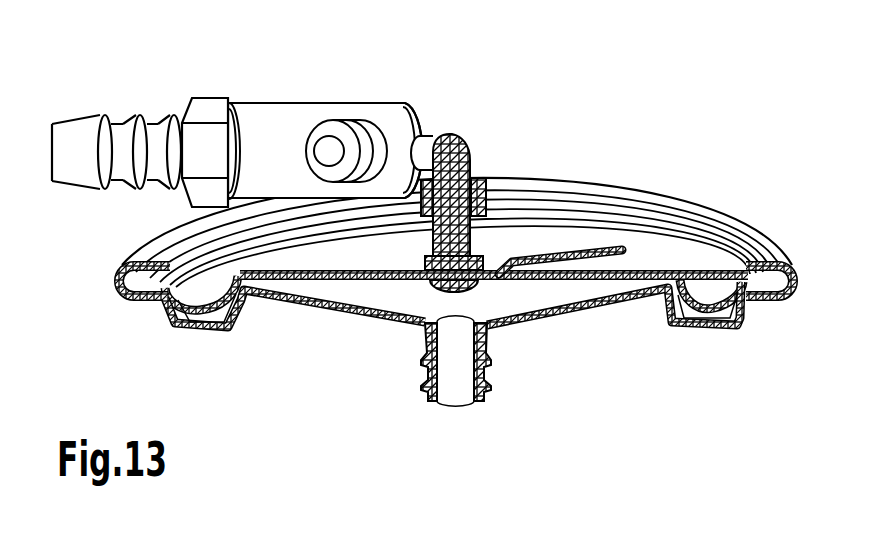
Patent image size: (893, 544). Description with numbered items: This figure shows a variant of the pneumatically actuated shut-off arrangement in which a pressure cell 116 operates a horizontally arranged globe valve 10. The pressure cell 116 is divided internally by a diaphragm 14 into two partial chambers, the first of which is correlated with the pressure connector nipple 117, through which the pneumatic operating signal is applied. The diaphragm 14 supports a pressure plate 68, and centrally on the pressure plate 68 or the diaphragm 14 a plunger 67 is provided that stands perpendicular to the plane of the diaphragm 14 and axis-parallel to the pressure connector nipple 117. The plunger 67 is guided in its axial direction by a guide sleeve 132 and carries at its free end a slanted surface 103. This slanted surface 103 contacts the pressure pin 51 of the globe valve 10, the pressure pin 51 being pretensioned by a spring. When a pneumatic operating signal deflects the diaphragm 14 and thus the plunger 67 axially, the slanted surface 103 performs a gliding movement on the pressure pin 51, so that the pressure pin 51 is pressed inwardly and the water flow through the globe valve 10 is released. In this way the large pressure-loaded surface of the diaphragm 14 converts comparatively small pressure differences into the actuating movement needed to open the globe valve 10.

The globe valve 10 is at (294, 120).
The diaphragm 14 is at (596, 283).
The pressure pin 51 is at (414, 118).
The plunger 67 is at (496, 262).
The pressure plate 68 is at (572, 243).
The slanted surface 103 is at (464, 148).
The pressure cell 116 is at (785, 294).
The pressure connector nipple 117 is at (423, 377).
The guide sleeve 132 is at (486, 194).